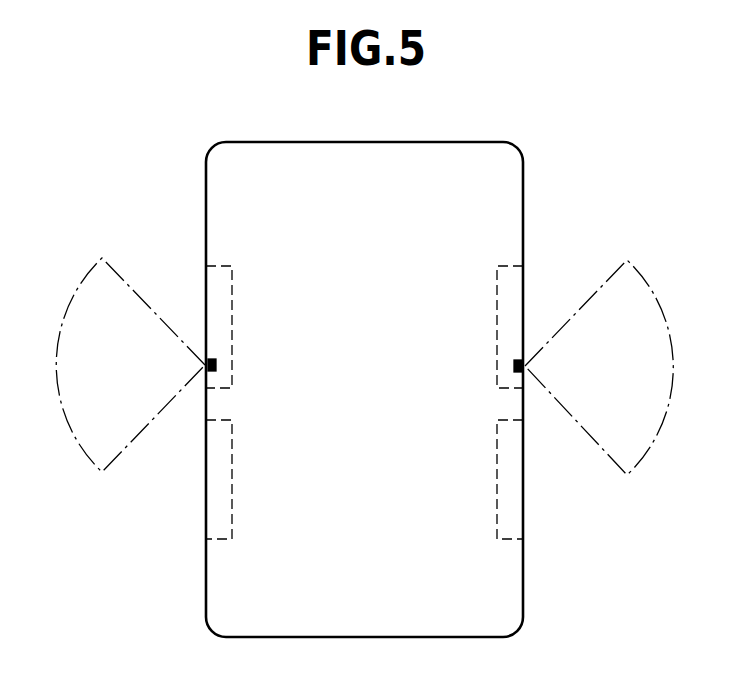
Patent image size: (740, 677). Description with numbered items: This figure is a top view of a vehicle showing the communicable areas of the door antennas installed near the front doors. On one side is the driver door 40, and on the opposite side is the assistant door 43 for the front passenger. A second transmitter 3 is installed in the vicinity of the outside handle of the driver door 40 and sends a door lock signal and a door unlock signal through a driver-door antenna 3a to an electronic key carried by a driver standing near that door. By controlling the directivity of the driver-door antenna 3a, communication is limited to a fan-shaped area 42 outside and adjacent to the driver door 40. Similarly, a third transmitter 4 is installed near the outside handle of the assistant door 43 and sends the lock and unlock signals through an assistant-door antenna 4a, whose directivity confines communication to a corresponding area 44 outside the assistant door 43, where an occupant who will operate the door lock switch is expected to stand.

The second transmitter 3 is at (456, 396).
The driver-door antenna 3a is at (514, 368).
The third transmitter 4 is at (266, 387).
The assistant-door antenna 4a is at (216, 366).
The driver door 40 is at (513, 290).
The communicable area 42 is at (655, 292).
The assistant door 43 is at (217, 288).
The communicable area 44 is at (75, 288).